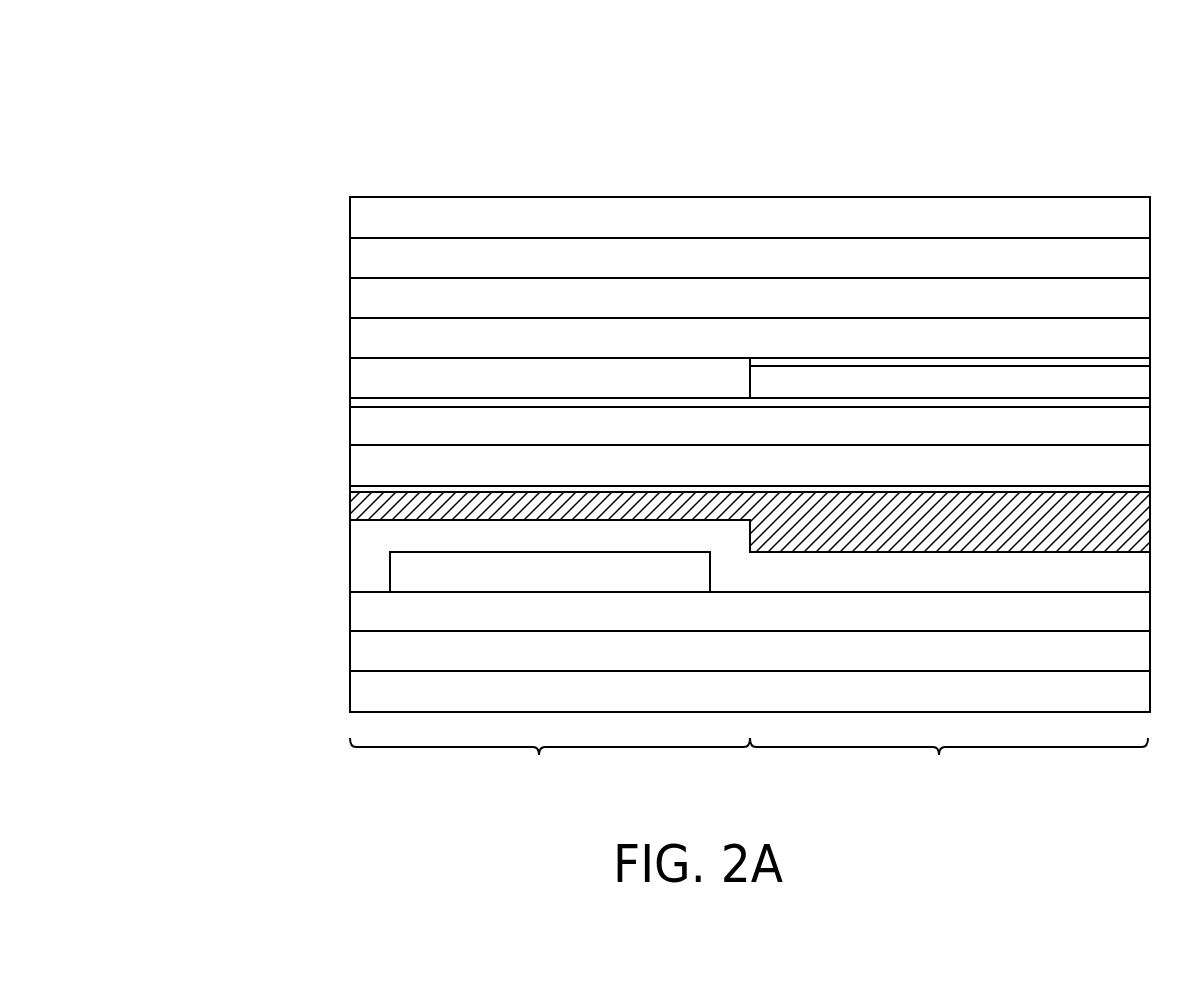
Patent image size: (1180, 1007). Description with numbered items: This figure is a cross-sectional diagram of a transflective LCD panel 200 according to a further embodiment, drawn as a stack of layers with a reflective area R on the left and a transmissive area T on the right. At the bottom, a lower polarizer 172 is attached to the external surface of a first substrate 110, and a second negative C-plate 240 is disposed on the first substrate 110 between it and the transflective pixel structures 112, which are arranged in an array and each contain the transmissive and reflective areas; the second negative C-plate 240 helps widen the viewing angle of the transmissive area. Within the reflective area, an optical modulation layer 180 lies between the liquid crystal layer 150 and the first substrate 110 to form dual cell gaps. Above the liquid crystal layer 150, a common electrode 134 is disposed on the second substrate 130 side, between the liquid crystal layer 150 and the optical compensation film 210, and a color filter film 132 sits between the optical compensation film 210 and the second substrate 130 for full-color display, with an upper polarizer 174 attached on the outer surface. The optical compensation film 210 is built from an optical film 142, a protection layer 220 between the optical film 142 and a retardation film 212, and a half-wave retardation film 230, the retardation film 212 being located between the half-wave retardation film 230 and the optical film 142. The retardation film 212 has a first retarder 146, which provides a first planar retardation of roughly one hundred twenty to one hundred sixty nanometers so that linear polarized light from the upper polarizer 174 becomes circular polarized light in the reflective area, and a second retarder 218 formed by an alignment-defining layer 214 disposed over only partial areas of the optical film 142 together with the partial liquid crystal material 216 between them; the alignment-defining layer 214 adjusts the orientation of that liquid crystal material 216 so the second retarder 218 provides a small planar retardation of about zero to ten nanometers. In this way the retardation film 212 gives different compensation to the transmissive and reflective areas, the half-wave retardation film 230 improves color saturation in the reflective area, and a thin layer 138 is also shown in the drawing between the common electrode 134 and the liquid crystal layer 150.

The LCD panel 200 is at (699, 419).
The first substrate 110 is at (362, 651).
The transflective pixel structures 112 is at (370, 544).
The second substrate 130 is at (362, 260).
The color filter film 132 is at (362, 299).
The common electrode 134 is at (362, 468).
The alignment layer 138 is at (363, 491).
The optical film 142 is at (616, 428).
The first retarder 146 is at (703, 378).
The liquid crystal layer 150 is at (358, 510).
The lower polarizer 172 is at (363, 691).
The upper polarizer 174 is at (362, 218).
The optical modulation layers 180 is at (405, 572).
The optical compensation film 210 is at (845, 63).
The retardation film 212 is at (845, 109).
The alignment-defining layer 214 is at (863, 361).
The partial liquid crystal material 216 is at (797, 382).
The second retarder 218 is at (878, 149).
The protection layer 220 is at (475, 402).
The λ/2 retardation film 230 is at (558, 343).
The second negative C-plate 240 is at (362, 612).